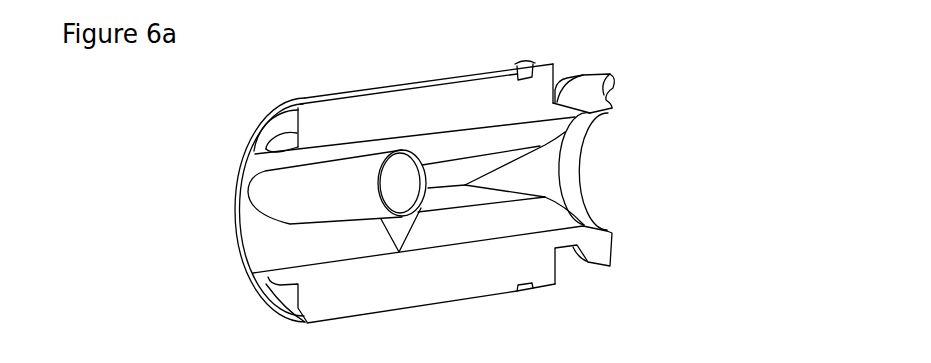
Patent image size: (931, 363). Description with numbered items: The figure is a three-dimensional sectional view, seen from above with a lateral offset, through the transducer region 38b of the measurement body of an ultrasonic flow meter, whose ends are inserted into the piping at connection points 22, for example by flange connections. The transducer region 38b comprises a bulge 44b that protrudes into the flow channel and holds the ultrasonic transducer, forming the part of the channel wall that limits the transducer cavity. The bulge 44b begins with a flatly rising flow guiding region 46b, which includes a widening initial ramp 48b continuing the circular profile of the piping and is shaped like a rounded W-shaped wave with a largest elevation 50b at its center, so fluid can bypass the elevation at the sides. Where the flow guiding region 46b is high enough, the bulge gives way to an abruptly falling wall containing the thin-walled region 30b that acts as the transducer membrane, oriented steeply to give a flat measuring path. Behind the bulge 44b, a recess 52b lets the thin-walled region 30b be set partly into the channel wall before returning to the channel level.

The connection point 22 is at (600, 245).
The thin-walled region 30b is at (403, 195).
The transducer region 38b is at (690, 70).
The bulge 44b is at (478, 132).
The flow guiding region 46b is at (480, 223).
The initial ramp 48b is at (515, 188).
The largest elevation 50b is at (455, 188).
The recess 52b is at (313, 194).